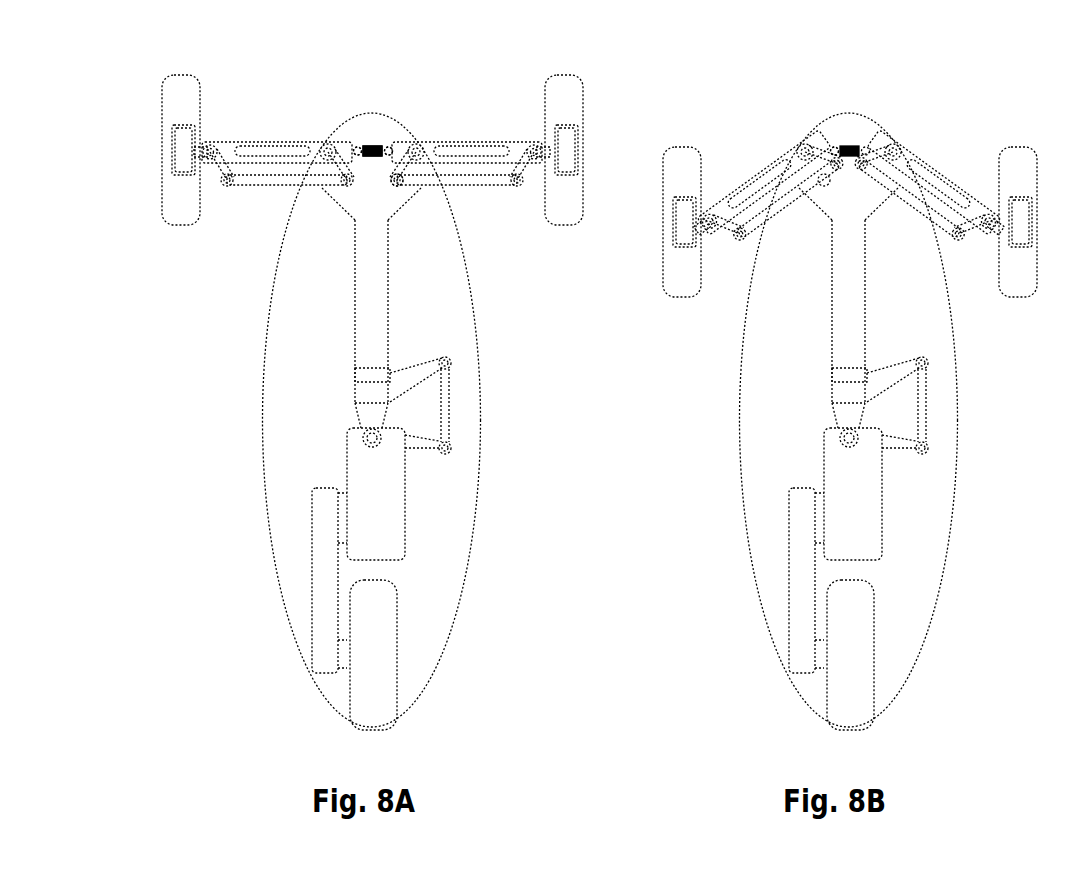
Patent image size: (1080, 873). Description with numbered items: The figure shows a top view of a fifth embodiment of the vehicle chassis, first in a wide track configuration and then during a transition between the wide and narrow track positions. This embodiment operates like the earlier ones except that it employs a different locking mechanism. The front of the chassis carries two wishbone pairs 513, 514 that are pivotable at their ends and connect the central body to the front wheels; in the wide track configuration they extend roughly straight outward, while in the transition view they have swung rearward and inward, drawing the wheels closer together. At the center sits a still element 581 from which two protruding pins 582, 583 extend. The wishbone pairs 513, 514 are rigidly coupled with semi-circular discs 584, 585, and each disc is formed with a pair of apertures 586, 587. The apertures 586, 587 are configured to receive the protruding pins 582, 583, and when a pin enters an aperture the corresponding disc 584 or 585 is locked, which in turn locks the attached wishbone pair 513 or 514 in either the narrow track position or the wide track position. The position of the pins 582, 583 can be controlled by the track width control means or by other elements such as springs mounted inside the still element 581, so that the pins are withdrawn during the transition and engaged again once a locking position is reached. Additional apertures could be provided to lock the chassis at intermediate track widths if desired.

In FIG. 8A, the wishbone pair 513 is at (287, 139).
In FIG. 8A, the wishbone pair 514 is at (493, 160).
In FIG. 8A, the still element 581 is at (370, 148).
In FIG. 8A, the protruding pin 582 is at (362, 148).
In FIG. 8A, the protruding pin 583 is at (387, 151).
In FIG. 8A, the semi-circular disc 584 is at (353, 150).
In FIG. 8B, the semi-circular disc 584 is at (825, 148).
In FIG. 8A, the semi-circular disc 585 is at (402, 155).
In FIG. 8B, the semi-circular disc 585 is at (868, 150).
In FIG. 8B, the aperture 586 is at (832, 138).
In FIG. 8B, the aperture 587 is at (828, 158).